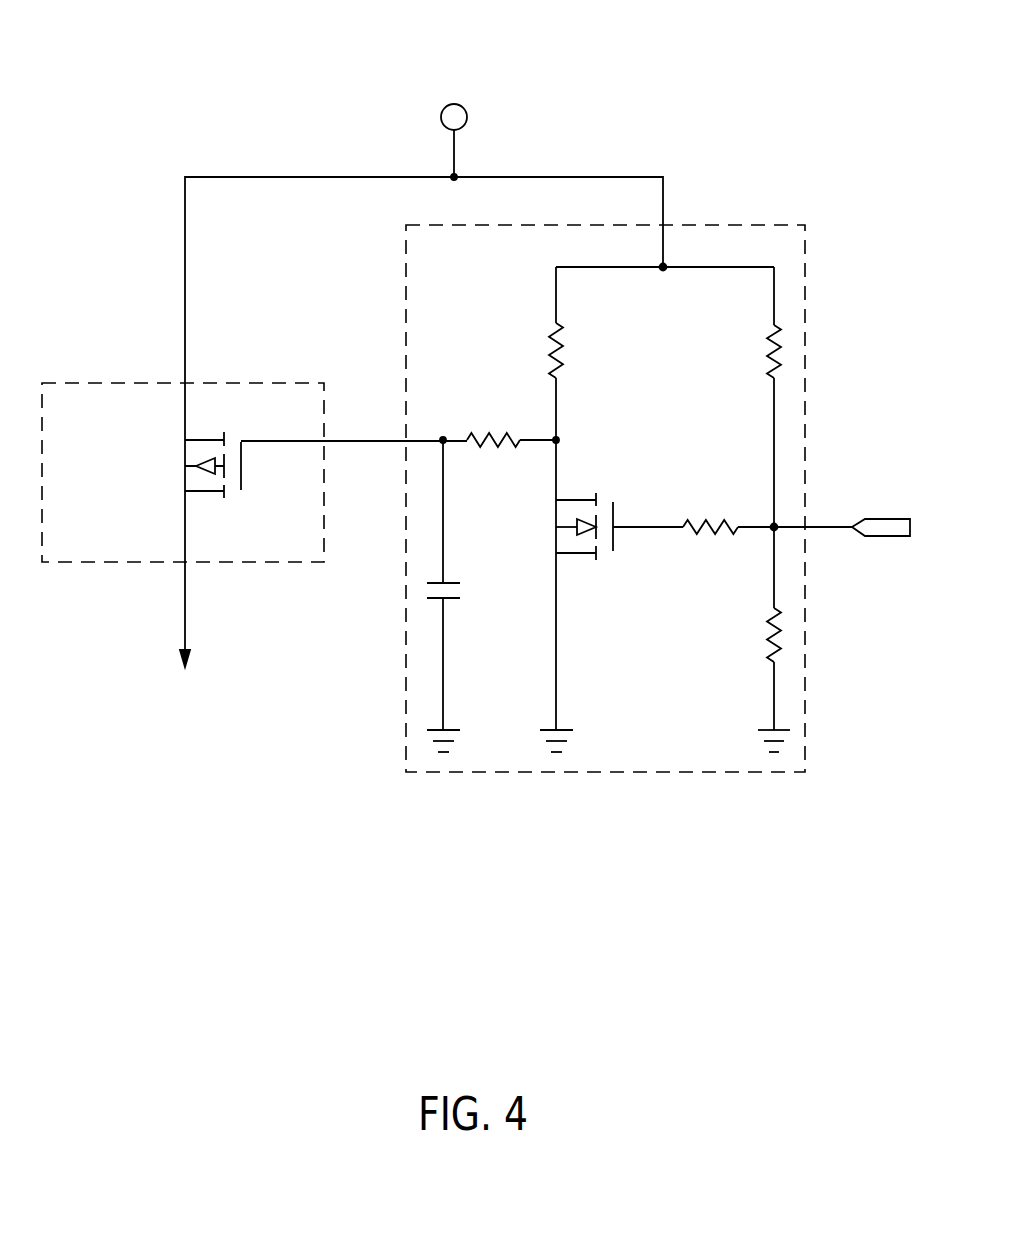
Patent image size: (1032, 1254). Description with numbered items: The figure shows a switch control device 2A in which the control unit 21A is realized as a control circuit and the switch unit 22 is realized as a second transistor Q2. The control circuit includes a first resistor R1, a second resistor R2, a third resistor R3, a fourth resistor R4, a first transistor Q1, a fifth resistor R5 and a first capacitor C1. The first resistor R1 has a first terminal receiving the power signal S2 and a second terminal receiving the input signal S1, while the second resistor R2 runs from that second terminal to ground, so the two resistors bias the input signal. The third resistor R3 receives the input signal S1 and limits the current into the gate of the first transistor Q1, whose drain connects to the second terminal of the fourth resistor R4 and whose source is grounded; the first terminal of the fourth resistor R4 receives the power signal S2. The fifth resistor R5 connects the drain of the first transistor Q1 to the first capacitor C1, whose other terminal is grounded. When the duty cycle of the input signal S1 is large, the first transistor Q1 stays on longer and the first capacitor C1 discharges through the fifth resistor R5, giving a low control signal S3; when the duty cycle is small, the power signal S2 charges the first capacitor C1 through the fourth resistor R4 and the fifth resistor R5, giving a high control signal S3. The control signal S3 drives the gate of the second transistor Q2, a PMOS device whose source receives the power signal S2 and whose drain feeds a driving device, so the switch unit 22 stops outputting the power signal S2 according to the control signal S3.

The switch control device 2A is at (110, 35).
The control unit 21A is at (768, 224).
The switch unit 22 is at (90, 383).
The first transistor Q1 is at (566, 596).
The second transistor Q2 is at (193, 465).
The first resistor R1 is at (756, 397).
The second resistor R2 is at (761, 639).
The third resistor R3 is at (693, 511).
The fourth resistor R4 is at (574, 353).
The fifth resistor R5 is at (493, 425).
The first capacitor C1 is at (462, 596).
The input signal S1 is at (857, 530).
The power signal S2 is at (218, 626).
The control signal S3 is at (340, 440).